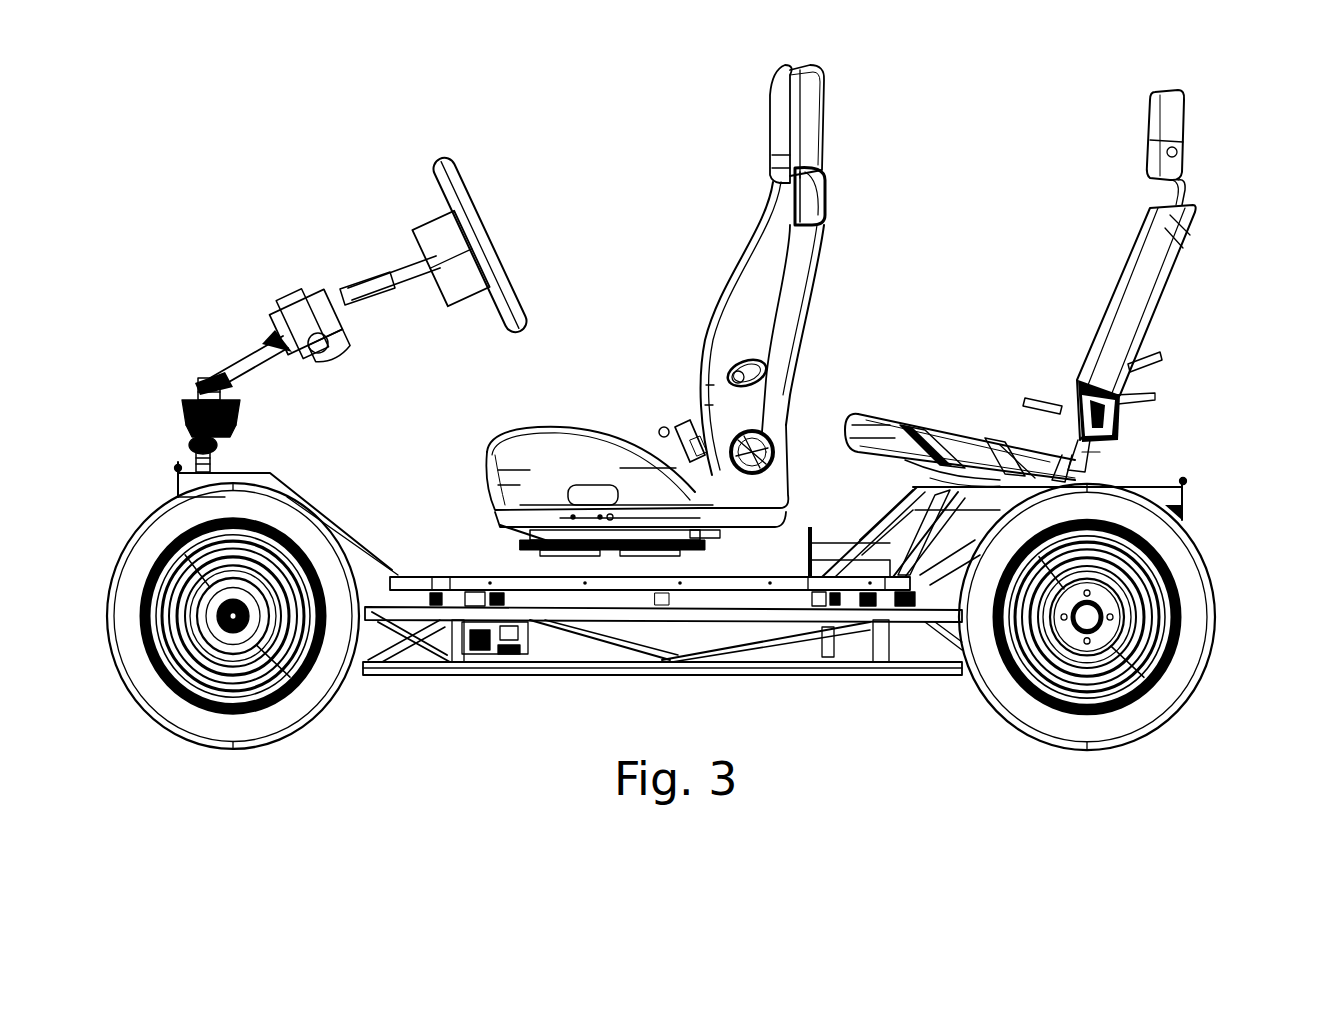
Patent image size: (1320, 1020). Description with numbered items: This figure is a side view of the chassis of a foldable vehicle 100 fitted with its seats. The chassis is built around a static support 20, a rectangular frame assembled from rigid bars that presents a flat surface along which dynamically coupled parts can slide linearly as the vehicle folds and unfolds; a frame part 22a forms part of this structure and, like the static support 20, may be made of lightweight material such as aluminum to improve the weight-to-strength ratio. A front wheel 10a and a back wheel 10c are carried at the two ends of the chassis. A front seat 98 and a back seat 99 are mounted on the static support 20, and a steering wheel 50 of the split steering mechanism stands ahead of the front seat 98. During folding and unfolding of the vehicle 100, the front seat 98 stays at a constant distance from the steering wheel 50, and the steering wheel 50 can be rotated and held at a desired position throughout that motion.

The foldable vehicle 100 is at (702, 407).
The front wheel 10a is at (293, 487).
The back wheel 10c is at (1195, 545).
The static support 20 is at (425, 577).
The frame part 22a is at (810, 577).
The steering wheel 50 is at (480, 207).
The front seat 98 is at (820, 225).
The back seat 99 is at (1180, 258).